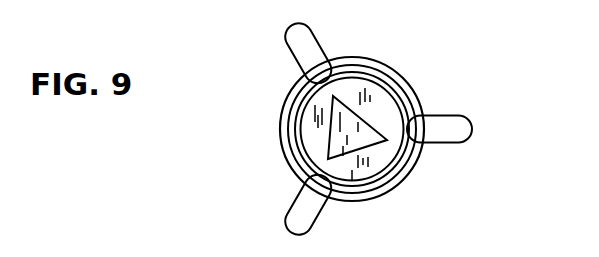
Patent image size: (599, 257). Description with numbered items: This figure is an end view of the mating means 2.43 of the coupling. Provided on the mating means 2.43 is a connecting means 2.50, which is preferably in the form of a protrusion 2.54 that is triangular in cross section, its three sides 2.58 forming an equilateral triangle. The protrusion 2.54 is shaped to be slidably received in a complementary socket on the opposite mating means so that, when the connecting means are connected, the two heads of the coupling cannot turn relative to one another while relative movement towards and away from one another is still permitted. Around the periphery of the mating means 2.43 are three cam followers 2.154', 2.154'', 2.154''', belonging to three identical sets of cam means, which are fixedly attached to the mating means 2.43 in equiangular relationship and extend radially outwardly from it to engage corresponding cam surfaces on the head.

The mating means 2.43 is at (423, 104).
The connecting means 2.50 is at (378, 150).
The protrusion 2.54 is at (357, 117).
The sides of protrusion 2.58 is at (352, 106).
The cam follower 2.154' is at (476, 133).
The cam follower 2.154'' is at (266, 206).
The cam follower 2.154''' is at (275, 57).